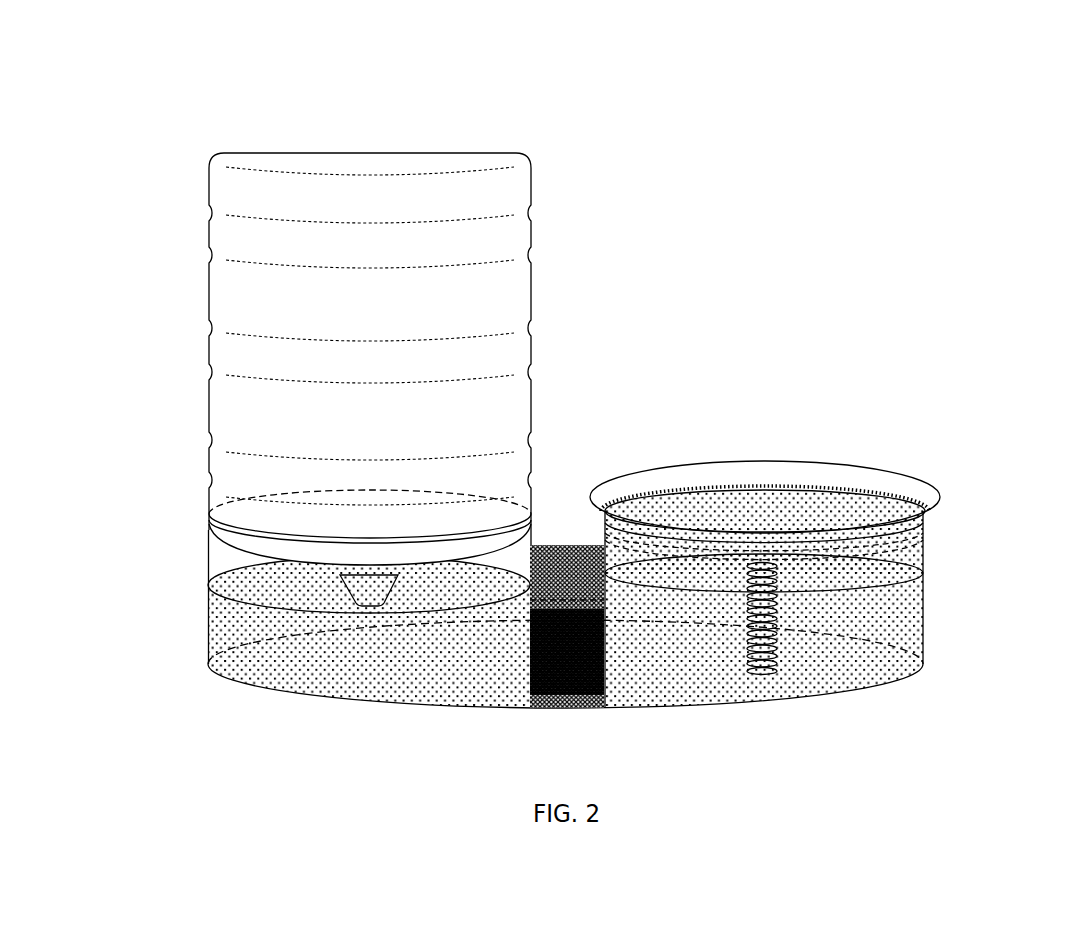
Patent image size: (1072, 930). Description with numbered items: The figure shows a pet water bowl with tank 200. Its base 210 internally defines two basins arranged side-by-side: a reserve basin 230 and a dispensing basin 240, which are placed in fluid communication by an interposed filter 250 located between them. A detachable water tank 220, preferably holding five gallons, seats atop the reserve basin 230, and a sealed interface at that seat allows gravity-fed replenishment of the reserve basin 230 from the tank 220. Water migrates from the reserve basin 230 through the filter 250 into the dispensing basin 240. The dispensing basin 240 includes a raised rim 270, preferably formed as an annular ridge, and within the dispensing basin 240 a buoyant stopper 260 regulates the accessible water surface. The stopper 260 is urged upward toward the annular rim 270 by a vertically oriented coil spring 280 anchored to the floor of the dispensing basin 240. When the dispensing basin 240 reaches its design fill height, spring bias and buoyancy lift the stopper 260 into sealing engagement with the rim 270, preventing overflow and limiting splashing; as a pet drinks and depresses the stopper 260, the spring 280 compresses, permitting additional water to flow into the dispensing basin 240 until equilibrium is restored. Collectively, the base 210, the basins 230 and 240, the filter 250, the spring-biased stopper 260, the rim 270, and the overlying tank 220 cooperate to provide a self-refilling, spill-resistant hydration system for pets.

The pet water bowl with tank 200 is at (1065, 60).
The base 210 is at (338, 712).
The water tank 220 is at (365, 140).
The reserve basin 230 is at (222, 624).
The dispensing basin 240 is at (886, 611).
The filter 250 is at (562, 601).
The buoyant stopper 260 is at (722, 503).
The raised rim 270 is at (909, 470).
The coil spring 280 is at (765, 690).